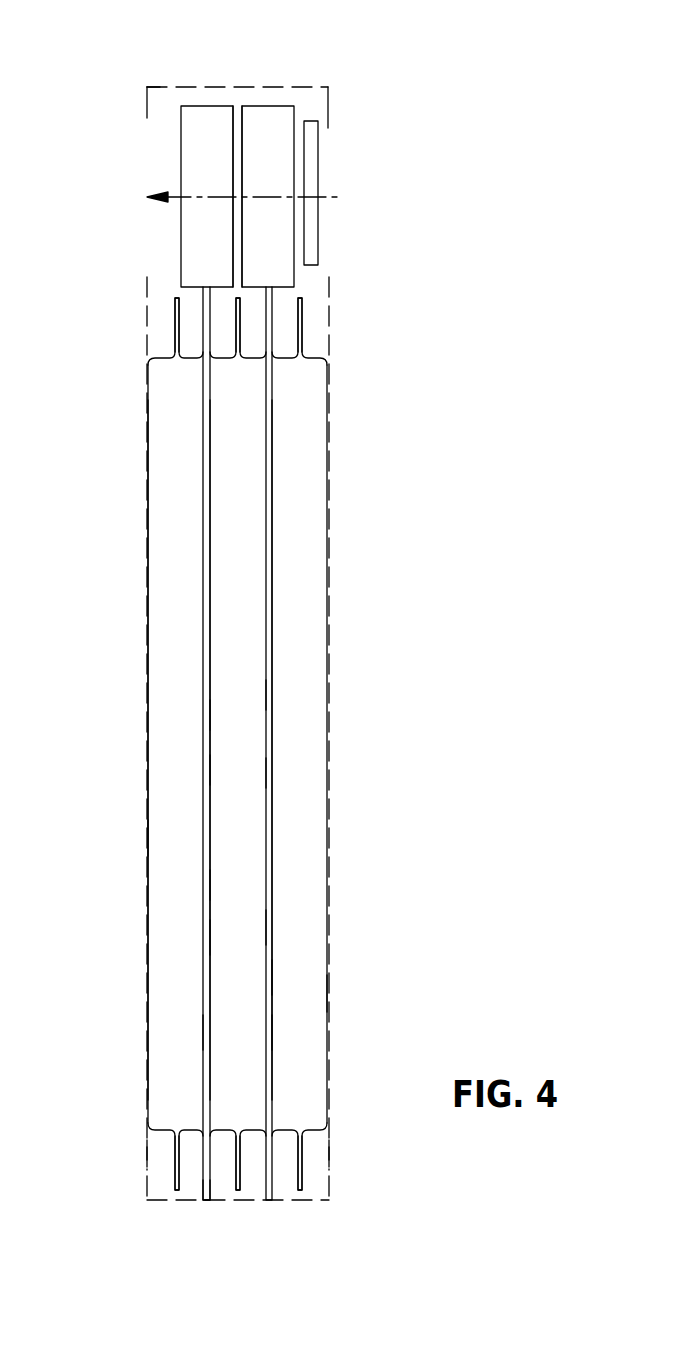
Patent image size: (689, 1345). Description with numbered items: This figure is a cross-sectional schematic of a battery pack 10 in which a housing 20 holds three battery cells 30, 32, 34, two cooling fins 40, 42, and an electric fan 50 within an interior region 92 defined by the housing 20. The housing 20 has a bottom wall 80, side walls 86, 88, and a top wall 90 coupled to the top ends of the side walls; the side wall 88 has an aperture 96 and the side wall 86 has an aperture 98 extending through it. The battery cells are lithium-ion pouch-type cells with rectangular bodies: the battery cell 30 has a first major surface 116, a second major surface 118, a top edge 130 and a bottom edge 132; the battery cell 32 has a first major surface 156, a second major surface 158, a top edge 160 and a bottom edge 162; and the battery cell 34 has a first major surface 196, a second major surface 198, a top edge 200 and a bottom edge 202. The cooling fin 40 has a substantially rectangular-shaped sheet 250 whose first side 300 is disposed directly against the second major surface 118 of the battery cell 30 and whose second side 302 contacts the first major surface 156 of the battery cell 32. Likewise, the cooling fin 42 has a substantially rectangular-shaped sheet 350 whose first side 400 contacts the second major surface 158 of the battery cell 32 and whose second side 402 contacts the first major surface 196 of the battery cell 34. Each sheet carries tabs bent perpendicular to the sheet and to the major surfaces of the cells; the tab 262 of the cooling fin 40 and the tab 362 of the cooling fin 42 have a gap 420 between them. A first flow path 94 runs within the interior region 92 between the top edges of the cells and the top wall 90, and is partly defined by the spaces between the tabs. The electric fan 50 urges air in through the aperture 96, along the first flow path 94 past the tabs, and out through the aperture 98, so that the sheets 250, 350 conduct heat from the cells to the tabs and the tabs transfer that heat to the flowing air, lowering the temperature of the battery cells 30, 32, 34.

The battery pack 10 is at (500, 202).
The housing 20 is at (340, 432).
The battery cell 30 is at (170, 500).
The battery cell 32 is at (231, 500).
The battery cell 34 is at (293, 500).
The cooling fin 40 is at (192, 1032).
The cooling fin 42 is at (283, 1032).
The electric fan 50 is at (318, 247).
The bottom wall 80 is at (203, 1200).
The side wall 86 is at (147, 1160).
The side wall 88 is at (329, 1150).
The top wall 90 is at (170, 87).
The interior region 92 is at (155, 87).
The first flow path 94 is at (333, 197).
The aperture 96 is at (328, 128).
The aperture 98 is at (147, 118).
The first major surface 116 is at (147, 851).
The second major surface 118 is at (206, 898).
The top edge 130 is at (174, 308).
The bottom edge 132 is at (173, 1192).
The first major surface 156 is at (211, 950).
The second major surface 158 is at (265, 992).
The top edge 160 is at (235, 330).
The bottom edge 162 is at (238, 1192).
The first major surface 196 is at (272, 938).
The second major surface 198 is at (337, 1004).
The top edge 200 is at (302, 312).
The bottom edge 202 is at (300, 1192).
The substantially rectangular-shaped sheet 250 is at (207, 655).
The tab 262 is at (193, 106).
The first side 300 is at (206, 727).
The second side 302 is at (210, 780).
The substantially rectangular-shaped sheet 350 is at (268, 628).
The tab 362 is at (265, 106).
The first side 400 is at (268, 703).
The second side 402 is at (270, 783).
The gap 420 is at (238, 113).